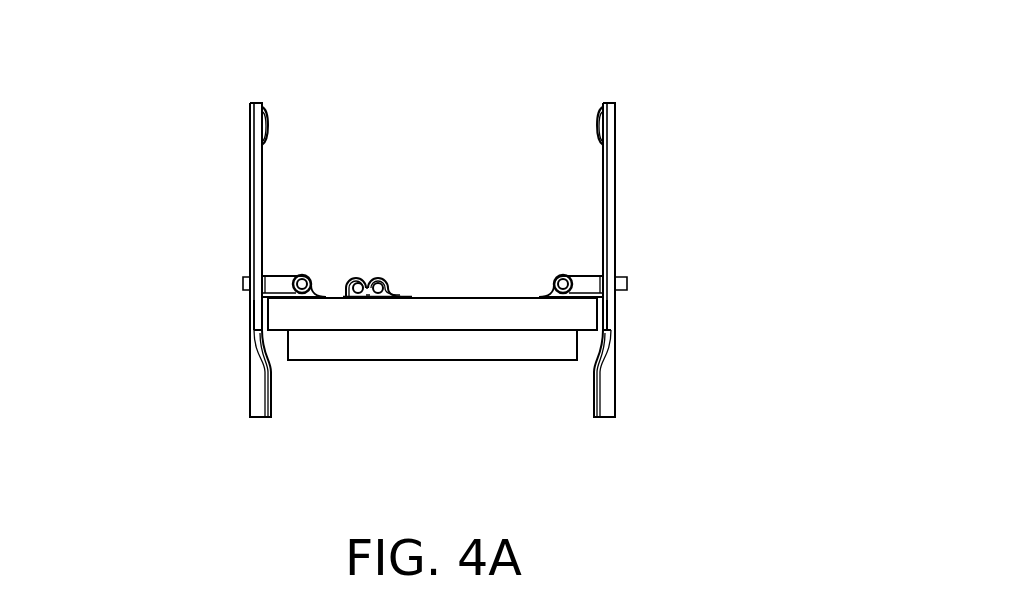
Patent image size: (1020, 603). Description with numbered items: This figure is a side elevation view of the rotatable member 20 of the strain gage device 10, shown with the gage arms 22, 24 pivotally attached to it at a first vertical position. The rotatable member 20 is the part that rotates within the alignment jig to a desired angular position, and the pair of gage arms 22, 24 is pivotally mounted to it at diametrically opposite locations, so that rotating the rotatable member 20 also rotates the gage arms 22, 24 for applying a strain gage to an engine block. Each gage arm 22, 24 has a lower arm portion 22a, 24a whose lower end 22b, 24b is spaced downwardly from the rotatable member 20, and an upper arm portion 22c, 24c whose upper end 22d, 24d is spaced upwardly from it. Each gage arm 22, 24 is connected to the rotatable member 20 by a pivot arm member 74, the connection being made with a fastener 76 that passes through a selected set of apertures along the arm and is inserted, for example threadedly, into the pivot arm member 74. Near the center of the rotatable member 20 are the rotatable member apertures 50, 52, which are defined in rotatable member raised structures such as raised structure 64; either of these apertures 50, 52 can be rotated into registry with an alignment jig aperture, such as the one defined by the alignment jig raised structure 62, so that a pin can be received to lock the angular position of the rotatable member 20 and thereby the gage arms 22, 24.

The strain gage device 10 is at (181, 383).
The rotatable member 20 is at (446, 312).
The gage arm 22 is at (221, 203).
The lower arm portion 22a is at (250, 318).
The lower end 22b is at (252, 405).
The upper arm portion 22c is at (258, 155).
The upper end 22d is at (258, 102).
The gage arm 24 is at (627, 243).
The lower arm portion 24a is at (612, 322).
The lower end 24b is at (612, 405).
The upper arm portion 24c is at (614, 183).
The upper end 24d is at (612, 122).
The rotatable member aperture 50 is at (380, 279).
The rotatable member aperture 52 is at (360, 278).
The alignment jig raised structure 62 is at (396, 284).
The rotatable member raised structure 64 is at (346, 278).
The pivot arm member 74 is at (287, 276).
The fastener 76 is at (628, 282).